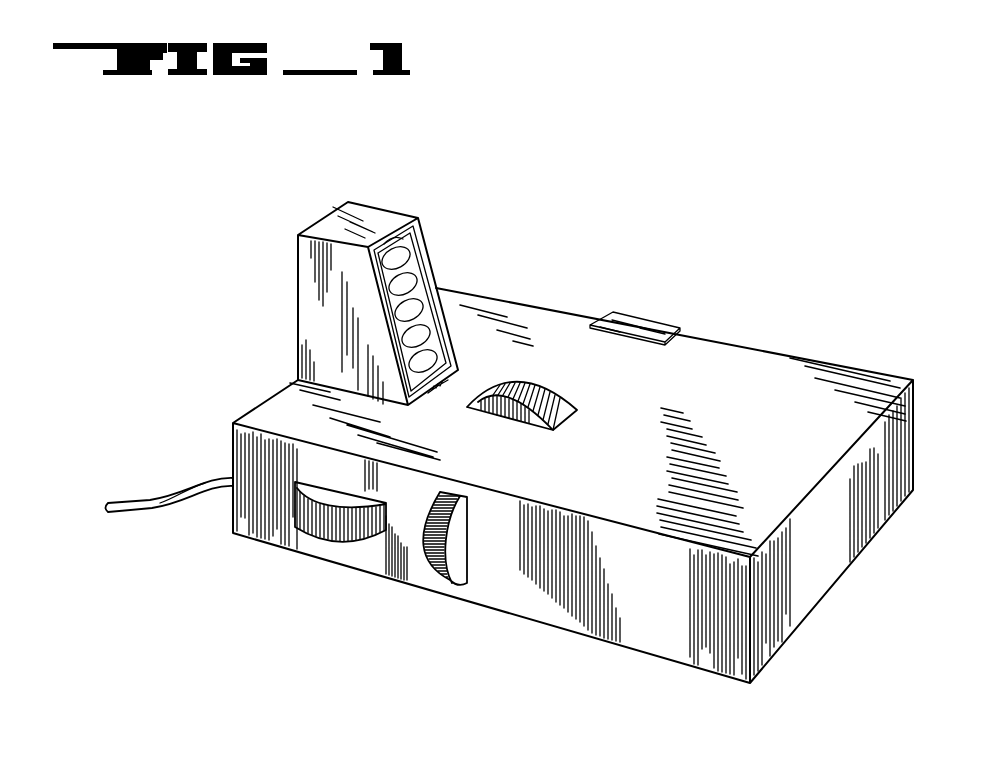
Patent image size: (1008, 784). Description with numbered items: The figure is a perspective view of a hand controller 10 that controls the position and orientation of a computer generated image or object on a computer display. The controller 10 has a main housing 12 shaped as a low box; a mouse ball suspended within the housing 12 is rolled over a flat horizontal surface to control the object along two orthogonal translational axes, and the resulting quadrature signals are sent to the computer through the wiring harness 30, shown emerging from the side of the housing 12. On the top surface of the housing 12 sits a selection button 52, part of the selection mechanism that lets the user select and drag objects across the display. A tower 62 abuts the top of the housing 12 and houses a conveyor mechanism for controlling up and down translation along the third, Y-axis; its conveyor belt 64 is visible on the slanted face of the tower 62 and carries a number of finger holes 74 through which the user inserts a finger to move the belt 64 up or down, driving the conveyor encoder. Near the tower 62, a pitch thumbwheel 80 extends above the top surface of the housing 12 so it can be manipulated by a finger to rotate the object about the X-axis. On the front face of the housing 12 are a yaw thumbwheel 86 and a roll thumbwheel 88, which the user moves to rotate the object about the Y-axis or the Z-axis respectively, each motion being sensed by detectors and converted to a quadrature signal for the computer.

The hand controller 10 is at (510, 418).
The main housing 12 is at (805, 585).
The wiring harness 30 is at (172, 502).
The selection button 52 is at (657, 328).
The tower 62 is at (411, 279).
The conveyor belt 64 is at (413, 267).
The finger holes 74 is at (422, 337).
The pitch thumbwheel 80 is at (540, 387).
The yaw thumbwheel 86 is at (327, 527).
The roll thumbwheel 88 is at (463, 570).